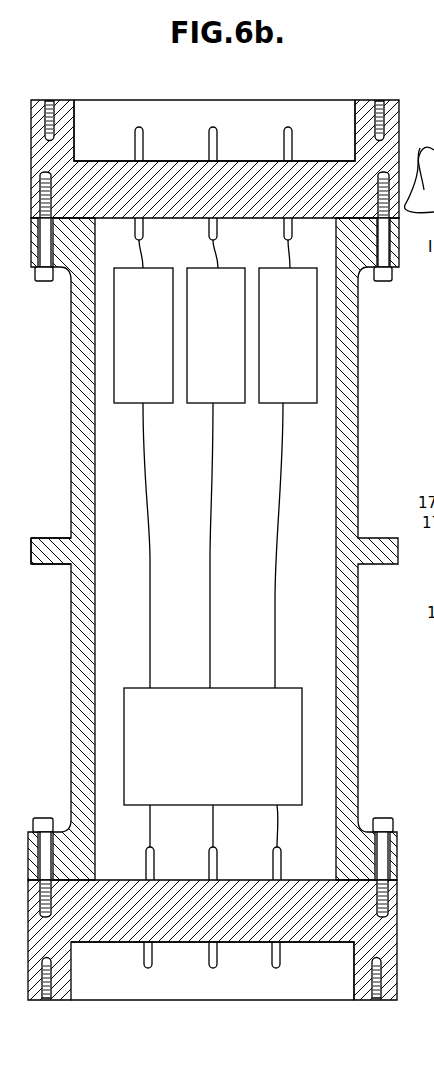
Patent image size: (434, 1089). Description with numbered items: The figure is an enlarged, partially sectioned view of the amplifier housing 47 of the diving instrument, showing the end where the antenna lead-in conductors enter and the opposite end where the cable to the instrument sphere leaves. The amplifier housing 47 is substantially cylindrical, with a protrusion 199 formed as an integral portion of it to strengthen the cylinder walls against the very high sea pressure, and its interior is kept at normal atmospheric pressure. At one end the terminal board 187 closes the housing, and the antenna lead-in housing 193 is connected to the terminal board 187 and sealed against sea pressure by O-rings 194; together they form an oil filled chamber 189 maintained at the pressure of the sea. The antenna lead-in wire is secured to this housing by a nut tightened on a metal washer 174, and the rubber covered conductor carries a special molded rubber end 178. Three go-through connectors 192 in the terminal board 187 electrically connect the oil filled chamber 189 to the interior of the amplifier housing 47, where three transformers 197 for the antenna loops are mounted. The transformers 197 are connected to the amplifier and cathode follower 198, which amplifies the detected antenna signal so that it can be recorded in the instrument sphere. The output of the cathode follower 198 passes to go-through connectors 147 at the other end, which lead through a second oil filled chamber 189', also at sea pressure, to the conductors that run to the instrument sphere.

The terminal board 187 is at (372, 101).
The oil filled chamber 189 is at (215, 121).
The oil filled chamber 189' is at (226, 983).
The go-through connectors 192 is at (213, 135).
The transformers 197 is at (157, 345).
The amplifier housing 47 is at (77, 420).
The protrusion 199 is at (52, 545).
The O-rings 194 is at (373, 882).
The amplifier and cathode follower 198 is at (227, 724).
The go-through connectors 147 is at (211, 960).
The metal washer 174 is at (424, 483).
The rubber end 178 is at (421, 543).
The antenna lead-in housing 193 is at (433, 578).